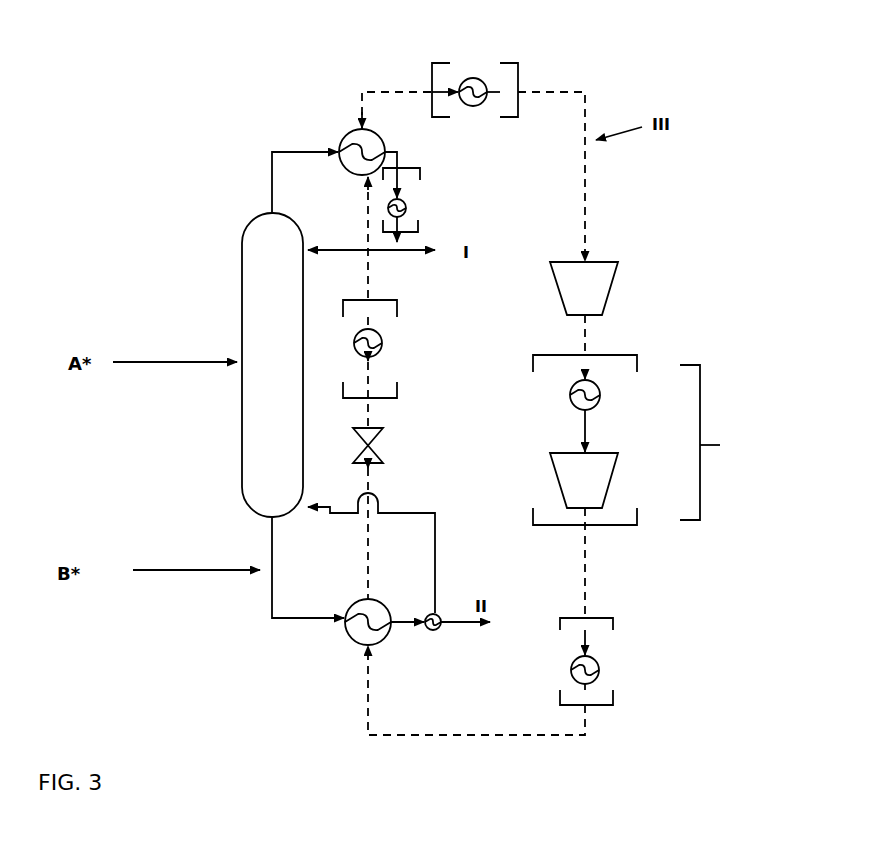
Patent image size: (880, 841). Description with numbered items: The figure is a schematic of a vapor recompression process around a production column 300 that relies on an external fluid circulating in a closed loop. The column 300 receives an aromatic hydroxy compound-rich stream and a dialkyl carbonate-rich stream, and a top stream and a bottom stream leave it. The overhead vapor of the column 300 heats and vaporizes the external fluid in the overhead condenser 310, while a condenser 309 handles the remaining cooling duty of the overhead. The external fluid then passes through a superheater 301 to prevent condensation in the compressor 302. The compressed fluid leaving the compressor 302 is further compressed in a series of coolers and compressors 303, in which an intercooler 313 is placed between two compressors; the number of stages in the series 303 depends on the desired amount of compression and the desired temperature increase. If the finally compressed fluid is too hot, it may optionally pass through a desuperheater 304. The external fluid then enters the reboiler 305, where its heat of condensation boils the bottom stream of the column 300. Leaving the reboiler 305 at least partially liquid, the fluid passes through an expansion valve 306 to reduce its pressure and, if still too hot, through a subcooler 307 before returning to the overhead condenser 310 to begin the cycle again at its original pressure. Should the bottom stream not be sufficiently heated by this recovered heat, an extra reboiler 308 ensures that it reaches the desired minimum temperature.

The production column 300 is at (272, 365).
The superheater 301 is at (481, 63).
The compressor 302 is at (625, 293).
The series of coolers and compressors 303 is at (654, 440).
The desuperheater 304 is at (615, 670).
The reboiler 305 is at (343, 644).
The expansion valve 306 is at (391, 447).
The subcooler 307 is at (393, 343).
The extra reboiler 308 is at (446, 641).
The condenser 309 is at (423, 203).
The overhead condenser 310 is at (330, 127).
The intercooler 313 is at (611, 401).